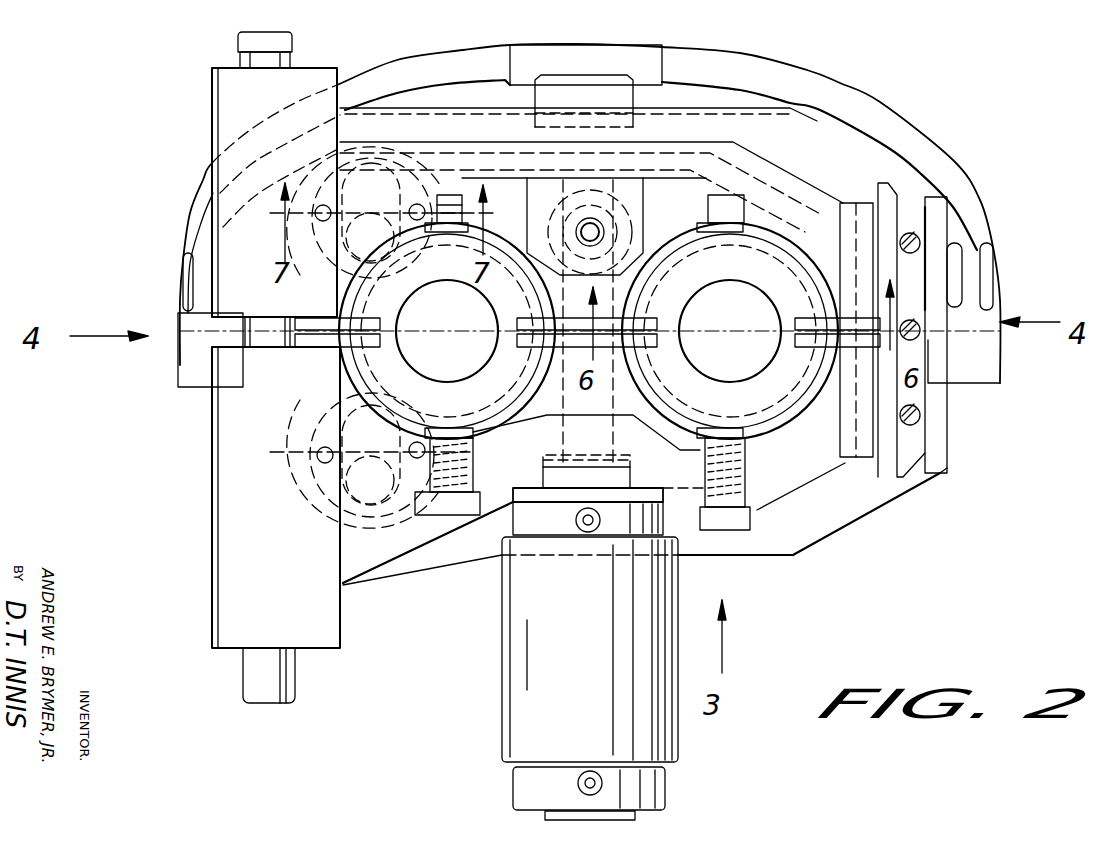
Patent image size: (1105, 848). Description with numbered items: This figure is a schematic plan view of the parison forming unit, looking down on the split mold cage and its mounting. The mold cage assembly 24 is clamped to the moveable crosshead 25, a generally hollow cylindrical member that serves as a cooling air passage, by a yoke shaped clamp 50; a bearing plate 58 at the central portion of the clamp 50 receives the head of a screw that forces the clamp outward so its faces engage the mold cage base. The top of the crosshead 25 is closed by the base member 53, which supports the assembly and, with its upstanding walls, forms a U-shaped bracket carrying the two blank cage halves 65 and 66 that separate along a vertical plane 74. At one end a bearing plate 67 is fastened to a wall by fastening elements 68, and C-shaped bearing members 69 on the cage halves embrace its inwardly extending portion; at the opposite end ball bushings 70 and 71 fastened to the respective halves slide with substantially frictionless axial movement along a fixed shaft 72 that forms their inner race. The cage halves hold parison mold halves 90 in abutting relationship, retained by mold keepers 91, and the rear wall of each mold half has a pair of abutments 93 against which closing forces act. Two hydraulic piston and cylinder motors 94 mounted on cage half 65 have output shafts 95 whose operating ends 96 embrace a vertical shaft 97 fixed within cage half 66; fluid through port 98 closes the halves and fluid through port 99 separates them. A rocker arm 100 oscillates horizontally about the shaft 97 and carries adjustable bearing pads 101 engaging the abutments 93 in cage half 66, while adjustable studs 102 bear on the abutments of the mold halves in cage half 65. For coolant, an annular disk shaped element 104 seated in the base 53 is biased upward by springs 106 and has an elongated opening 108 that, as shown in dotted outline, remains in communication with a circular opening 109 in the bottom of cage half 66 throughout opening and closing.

The mold cage assembly 24 is at (828, 478).
The moveable crosshead 25 is at (918, 500).
The yoke shaped clamp 50 is at (975, 208).
The base member 53 is at (925, 472).
The bearing plate 58 is at (625, 90).
The blank cage half 65 is at (793, 493).
The blank cage half 66 is at (815, 190).
The bearing plate 67 is at (915, 448).
The fastening elements 68 is at (922, 243).
The C-shaped bearing members 69 is at (893, 233).
The ball bushing 70 is at (228, 476).
The ball bushing 71 is at (265, 110).
The fixed shaft 72 is at (262, 672).
The vertical plane 74 is at (722, 292).
The parison mold halves 90 is at (490, 297).
The mold keepers 91 is at (330, 323).
The abutments 93 is at (437, 238).
The hydraulic piston and cylinder motors 94 is at (522, 664).
The output shaft 95 is at (612, 408).
The operating ends 96 is at (618, 208).
The vertical shaft 97 is at (592, 232).
The port 98 is at (590, 532).
The port 99 is at (592, 768).
The rocker arm 100 is at (725, 170).
The adjustable bearing pads 101 is at (440, 190).
The adjustable studs 102 is at (445, 530).
The annular disk shaped element 104 is at (318, 273).
The springs 106 is at (428, 218).
The elongated opening 108 is at (337, 172).
The circular opening 109 is at (297, 482).